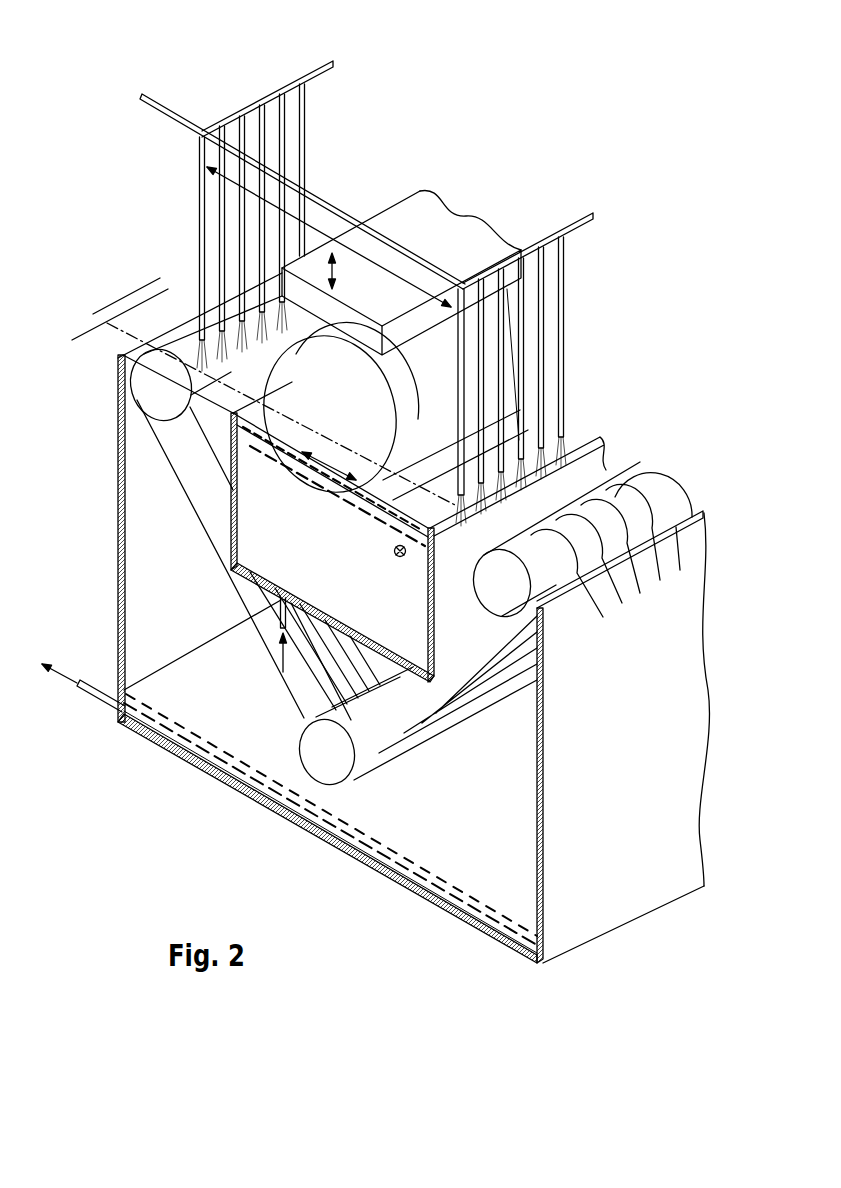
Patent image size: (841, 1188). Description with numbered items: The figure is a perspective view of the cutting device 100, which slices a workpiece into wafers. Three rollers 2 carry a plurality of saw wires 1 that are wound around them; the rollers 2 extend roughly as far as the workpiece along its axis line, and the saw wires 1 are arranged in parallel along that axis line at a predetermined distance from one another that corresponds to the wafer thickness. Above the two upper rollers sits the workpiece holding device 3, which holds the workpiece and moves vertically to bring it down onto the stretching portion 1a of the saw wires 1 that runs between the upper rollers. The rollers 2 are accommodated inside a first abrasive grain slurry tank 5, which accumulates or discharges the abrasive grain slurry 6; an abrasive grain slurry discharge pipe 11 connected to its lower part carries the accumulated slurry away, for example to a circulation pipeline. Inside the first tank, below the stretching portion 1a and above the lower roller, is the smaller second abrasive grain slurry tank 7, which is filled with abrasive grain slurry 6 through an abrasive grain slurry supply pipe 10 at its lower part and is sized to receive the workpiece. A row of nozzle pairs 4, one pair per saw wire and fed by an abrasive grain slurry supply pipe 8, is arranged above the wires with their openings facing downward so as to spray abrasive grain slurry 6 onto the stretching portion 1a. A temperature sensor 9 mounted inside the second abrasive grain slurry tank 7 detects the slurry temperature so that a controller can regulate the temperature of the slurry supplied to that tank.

The saw wire 1 is at (425, 728).
The stretching portion of the saw wire 1a is at (240, 478).
The rollers 2 is at (140, 388).
The workpiece holding device 3 is at (447, 216).
The nozzle pairs 4 is at (260, 133).
The first abrasive grain slurry tank 5 is at (248, 793).
The abrasive grain slurry 6 is at (190, 320).
The second abrasive grain slurry tank 7 is at (432, 642).
The abrasive grain slurry supply pipe 8 is at (137, 103).
The temperature sensor 9 is at (406, 560).
The abrasive grain slurry supply pipe 10 is at (283, 655).
The abrasive grain slurry discharge pipe 11 is at (92, 697).
The cutting device 100 is at (508, 200).